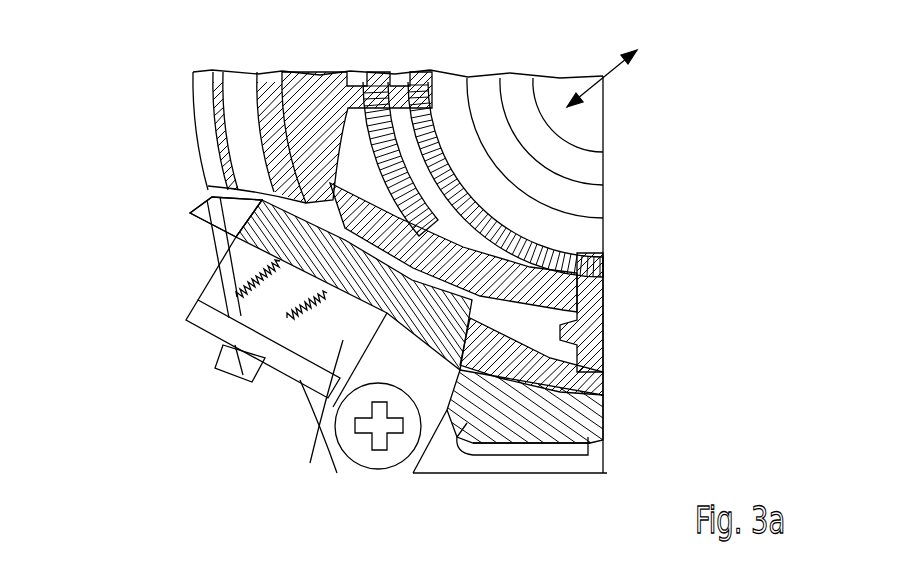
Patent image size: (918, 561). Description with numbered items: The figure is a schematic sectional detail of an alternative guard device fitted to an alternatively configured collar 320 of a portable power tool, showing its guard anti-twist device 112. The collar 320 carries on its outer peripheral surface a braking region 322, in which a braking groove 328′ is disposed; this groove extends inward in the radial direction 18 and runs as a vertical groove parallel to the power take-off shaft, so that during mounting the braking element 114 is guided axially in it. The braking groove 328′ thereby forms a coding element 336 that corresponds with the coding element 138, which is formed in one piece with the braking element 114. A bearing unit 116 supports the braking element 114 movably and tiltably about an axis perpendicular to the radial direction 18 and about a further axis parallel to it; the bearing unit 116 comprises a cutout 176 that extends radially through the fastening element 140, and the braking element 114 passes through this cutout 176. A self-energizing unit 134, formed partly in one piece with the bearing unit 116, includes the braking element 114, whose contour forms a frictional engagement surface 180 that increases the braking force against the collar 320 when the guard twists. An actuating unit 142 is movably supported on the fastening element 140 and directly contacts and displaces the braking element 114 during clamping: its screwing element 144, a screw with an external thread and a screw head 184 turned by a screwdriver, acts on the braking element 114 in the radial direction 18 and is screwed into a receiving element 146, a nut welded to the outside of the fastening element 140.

The radial direction 18 is at (605, 82).
The guard anti-twist device 112 is at (165, 218).
The braking element 114 is at (225, 238).
The coding element 138 is at (225, 238).
The bearing unit 116 is at (370, 327).
The self-energizing unit 134 is at (572, 327).
The fastening element 140 is at (600, 440).
The actuating unit 142 is at (172, 360).
The screwing element 144 is at (226, 368).
The receiving element 146 is at (263, 264).
The cutout 176 is at (265, 196).
The frictional engagement surface 180 is at (412, 293).
The screw head 184 is at (245, 370).
The collar 320 is at (590, 352).
The braking region 322 is at (475, 365).
The braking groove 328′ is at (340, 172).
The coding element 336 is at (392, 310).